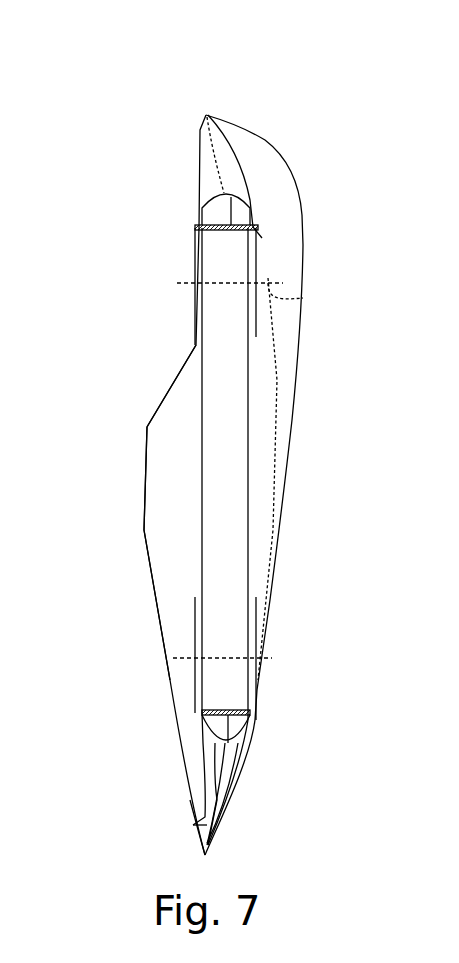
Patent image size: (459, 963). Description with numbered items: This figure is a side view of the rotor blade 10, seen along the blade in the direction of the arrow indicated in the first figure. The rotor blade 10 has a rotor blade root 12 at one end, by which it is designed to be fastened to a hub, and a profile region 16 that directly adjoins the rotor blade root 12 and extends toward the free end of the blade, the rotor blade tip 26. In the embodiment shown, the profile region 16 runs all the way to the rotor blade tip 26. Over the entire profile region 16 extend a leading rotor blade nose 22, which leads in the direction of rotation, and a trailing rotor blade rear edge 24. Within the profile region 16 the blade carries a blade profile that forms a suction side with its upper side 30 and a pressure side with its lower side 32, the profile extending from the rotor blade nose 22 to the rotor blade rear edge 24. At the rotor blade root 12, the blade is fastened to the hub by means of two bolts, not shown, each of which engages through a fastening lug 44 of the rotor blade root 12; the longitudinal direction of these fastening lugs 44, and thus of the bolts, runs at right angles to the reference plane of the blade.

The rotor blade 10 is at (318, 237).
The rotor blade root 12 is at (218, 253).
The profile region 16 is at (277, 180).
The rotor blade nose 22 is at (257, 133).
The rotor blade rear edge 24 is at (207, 856).
The rotor blade tip 26 is at (187, 370).
The upper side 30 is at (287, 367).
The lower side 32 is at (173, 455).
The fastening lug 44 is at (253, 325).